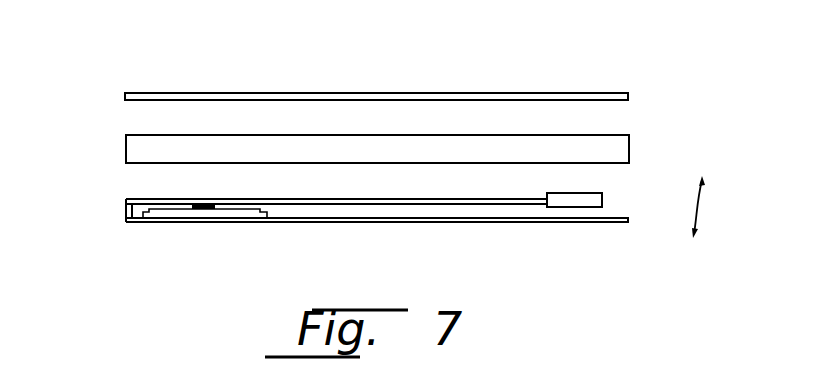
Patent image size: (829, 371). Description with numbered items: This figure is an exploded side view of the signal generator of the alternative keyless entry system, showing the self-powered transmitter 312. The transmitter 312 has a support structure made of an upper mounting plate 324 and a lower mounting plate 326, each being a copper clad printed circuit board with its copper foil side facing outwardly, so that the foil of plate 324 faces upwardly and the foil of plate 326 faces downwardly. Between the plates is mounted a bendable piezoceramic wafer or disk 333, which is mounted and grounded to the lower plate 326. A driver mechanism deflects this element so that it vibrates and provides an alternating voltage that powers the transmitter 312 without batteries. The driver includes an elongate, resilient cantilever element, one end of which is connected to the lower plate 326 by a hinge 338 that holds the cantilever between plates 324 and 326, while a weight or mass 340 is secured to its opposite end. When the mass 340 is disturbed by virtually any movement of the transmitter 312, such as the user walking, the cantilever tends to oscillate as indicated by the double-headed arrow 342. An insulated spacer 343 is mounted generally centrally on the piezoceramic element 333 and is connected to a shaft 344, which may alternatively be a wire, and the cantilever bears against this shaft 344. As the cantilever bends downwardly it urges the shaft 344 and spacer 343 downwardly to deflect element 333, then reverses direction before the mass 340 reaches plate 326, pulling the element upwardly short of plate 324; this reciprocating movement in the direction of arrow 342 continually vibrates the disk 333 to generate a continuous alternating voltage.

The transmitter 312 is at (136, 62).
The upper mounting plate 324 is at (585, 93).
The lower mounting plate 326 is at (603, 222).
The piezoceramic wafer 333 is at (176, 211).
The hinge 338 is at (128, 208).
The mass 340 is at (598, 200).
The double-headed arrow 342 is at (700, 212).
The insulated spacer 343 is at (210, 206).
The shaft 344 is at (200, 205).